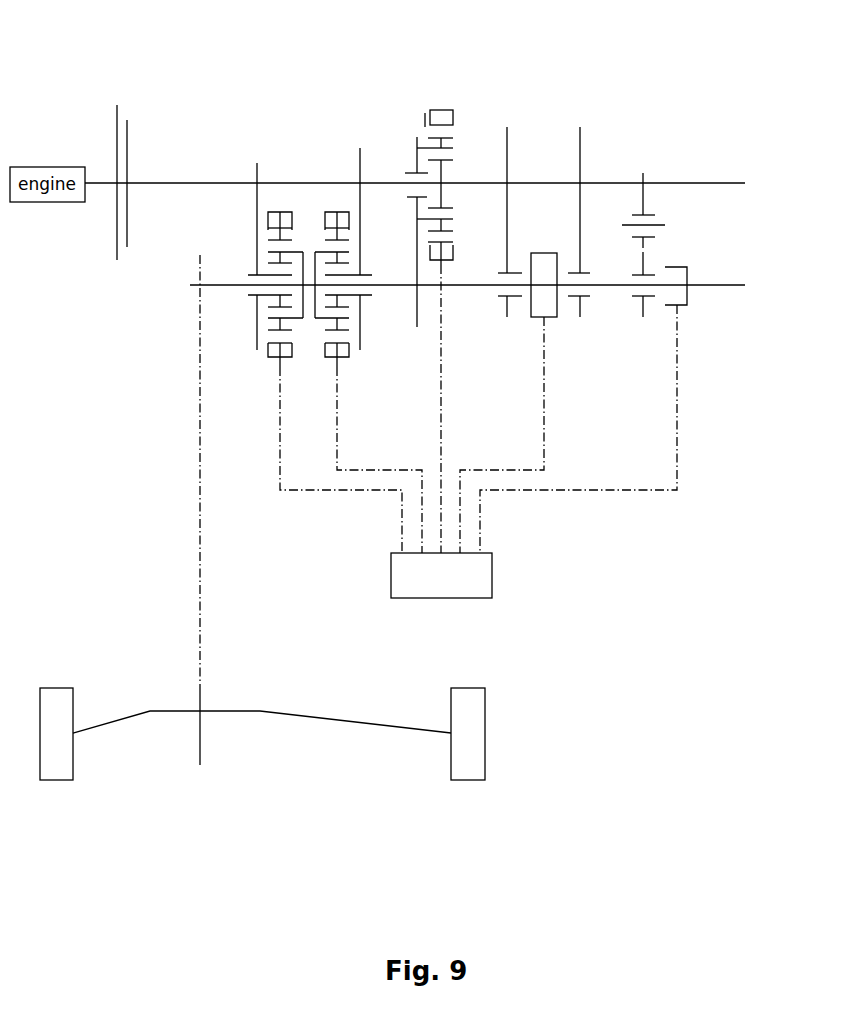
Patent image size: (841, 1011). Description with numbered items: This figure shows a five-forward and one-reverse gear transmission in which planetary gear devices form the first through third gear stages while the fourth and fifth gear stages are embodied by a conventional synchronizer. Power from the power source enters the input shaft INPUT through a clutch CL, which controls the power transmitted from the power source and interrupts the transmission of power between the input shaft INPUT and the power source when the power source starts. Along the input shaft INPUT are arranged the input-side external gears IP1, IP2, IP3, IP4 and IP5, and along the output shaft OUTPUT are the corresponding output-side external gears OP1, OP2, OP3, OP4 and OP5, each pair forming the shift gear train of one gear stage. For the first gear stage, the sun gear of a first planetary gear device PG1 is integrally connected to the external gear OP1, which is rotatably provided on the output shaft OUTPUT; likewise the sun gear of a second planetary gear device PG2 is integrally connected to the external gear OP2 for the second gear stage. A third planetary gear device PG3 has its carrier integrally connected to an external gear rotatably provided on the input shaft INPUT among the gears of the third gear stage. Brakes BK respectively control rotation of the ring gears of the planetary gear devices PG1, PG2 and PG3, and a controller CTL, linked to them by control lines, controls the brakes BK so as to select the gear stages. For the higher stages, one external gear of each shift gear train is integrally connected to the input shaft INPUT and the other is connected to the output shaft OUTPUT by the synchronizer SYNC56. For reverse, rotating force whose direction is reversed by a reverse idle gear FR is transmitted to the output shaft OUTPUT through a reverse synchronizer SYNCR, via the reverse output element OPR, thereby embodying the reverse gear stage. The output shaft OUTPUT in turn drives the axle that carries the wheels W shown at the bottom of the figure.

The clutch CL is at (118, 172).
The external gear IP1 is at (255, 161).
The external gear IP2 is at (358, 146).
The external gear IP3 is at (413, 134).
The external gear IP4 is at (509, 124).
The external gear IP5 is at (582, 124).
The external gear OP1 is at (256, 353).
The external gear OP2 is at (360, 353).
The external gear OP3 is at (417, 330).
The external gear OP4 is at (507, 320).
The external gear OP5 is at (583, 320).
The reverse output shaft OPR is at (647, 320).
The first planetary gear device PG1 is at (272, 366).
The second planetary gear device PG2 is at (330, 366).
The third planetary gear device PG3 is at (441, 107).
The brake BK is at (329, 212).
The reverse idle gear FR is at (645, 205).
The synchronizer SYNC56 is at (558, 320).
The reverse synchronizer SYNCR is at (688, 300).
The controller CTL is at (441, 575).
The wheel W is at (60, 781).
The input shaft INPUT is at (446, 184).
The output shaft OUTPUT is at (508, 286).